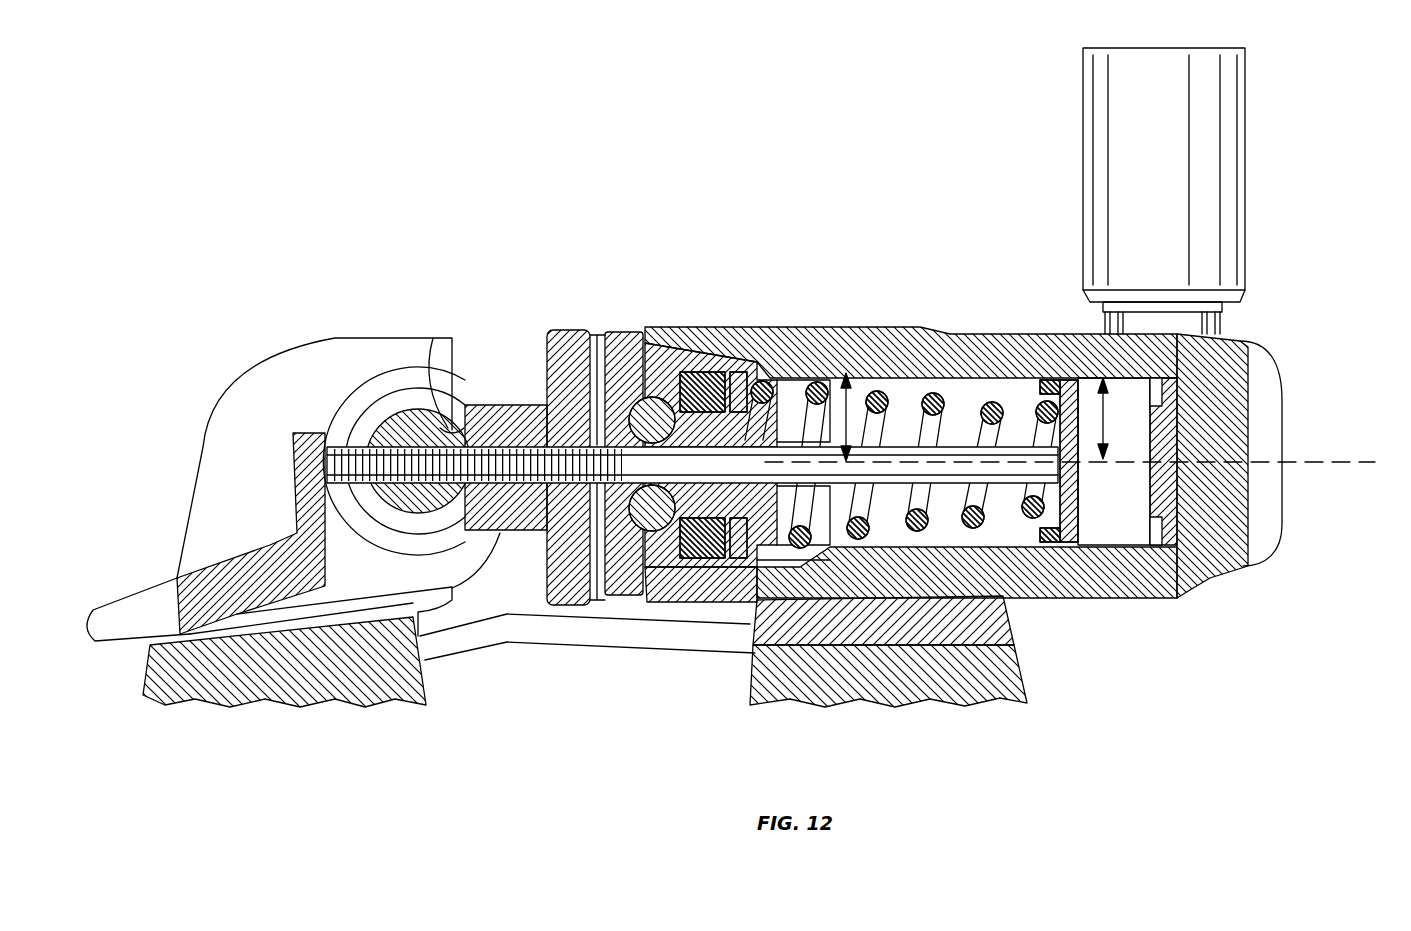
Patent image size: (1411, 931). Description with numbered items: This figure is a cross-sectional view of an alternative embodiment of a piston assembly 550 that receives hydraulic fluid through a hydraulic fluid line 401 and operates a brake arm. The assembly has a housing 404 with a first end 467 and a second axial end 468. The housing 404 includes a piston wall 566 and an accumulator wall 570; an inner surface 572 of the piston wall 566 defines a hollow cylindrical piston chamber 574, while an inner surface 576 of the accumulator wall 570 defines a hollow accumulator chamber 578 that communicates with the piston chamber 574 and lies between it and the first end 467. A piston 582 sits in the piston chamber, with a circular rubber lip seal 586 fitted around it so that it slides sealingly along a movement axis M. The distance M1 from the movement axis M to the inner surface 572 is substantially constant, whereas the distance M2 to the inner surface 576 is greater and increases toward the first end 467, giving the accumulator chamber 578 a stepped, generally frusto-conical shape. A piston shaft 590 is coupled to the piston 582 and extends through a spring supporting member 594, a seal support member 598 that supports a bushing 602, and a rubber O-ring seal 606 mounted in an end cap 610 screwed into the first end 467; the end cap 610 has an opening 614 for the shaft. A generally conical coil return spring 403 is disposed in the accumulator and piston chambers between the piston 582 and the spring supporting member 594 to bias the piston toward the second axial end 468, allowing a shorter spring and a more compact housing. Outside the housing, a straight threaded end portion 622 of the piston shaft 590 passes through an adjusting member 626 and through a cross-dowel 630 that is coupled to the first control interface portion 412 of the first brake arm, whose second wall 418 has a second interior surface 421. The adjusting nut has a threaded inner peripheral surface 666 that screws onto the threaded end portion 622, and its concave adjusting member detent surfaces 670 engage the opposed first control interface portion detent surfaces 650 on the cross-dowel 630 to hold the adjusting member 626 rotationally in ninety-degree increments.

The hydraulic fluid line 401 is at (1230, 98).
The return spring 403 is at (922, 377).
The housing 404 is at (1300, 389).
The first control interface portion 412 is at (190, 355).
The second wall 418 is at (285, 358).
The second interior surface 421 is at (235, 438).
The first end 467 is at (606, 612).
The second axial end 468 is at (1222, 577).
The piston assembly 550 is at (766, 120).
The piston wall 566 is at (1072, 345).
The accumulator wall 570 is at (853, 340).
The inner surface of piston wall 572 is at (1138, 522).
The piston chamber 574 is at (1107, 497).
The inner surface of accumulator wall 576 is at (753, 573).
The accumulator chamber 578 is at (783, 390).
The piston 582 is at (1050, 380).
The lip seal 586 is at (1060, 535).
The piston shaft 590 is at (957, 452).
The spring supporting member 594 is at (745, 400).
The seal support member 598 is at (722, 400).
The bushing 602 is at (690, 412).
The O-ring seal 606 is at (641, 418).
The end cap 610 is at (599, 318).
The opening 614 is at (610, 490).
The threaded end portion 622 is at (425, 455).
The adjusting member 626 is at (545, 318).
The cross-dowel 630 is at (374, 376).
The first control interface portion detent surfaces 650 is at (482, 405).
The threaded inner peripheral surface 666 is at (520, 495).
The adjusting member detent surfaces 670 is at (447, 420).
The movement axis M is at (1348, 462).
The distance M1 is at (1125, 405).
The distance M2 is at (823, 375).